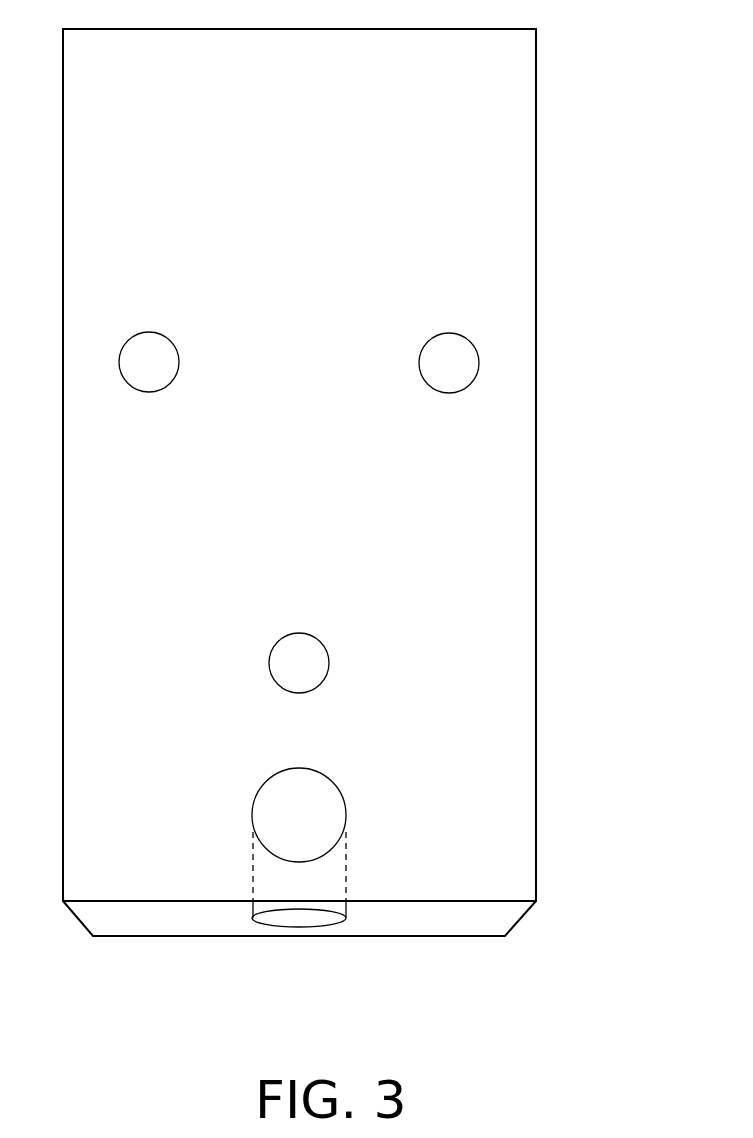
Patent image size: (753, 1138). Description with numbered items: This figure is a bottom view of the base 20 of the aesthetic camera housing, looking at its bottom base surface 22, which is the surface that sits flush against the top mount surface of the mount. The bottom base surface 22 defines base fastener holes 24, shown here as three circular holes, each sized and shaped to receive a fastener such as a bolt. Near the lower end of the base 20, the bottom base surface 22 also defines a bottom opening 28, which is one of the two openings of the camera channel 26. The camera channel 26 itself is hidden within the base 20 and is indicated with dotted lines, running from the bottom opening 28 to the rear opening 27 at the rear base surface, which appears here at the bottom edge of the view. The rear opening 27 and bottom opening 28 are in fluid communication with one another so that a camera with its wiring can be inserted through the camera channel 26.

The base 20 is at (560, 65).
The bottom base surface 22 is at (483, 193).
The base fastener holes 24 is at (157, 357).
The camera channel 26 is at (330, 880).
The rear opening 27 is at (294, 918).
The bottom opening 28 is at (340, 790).